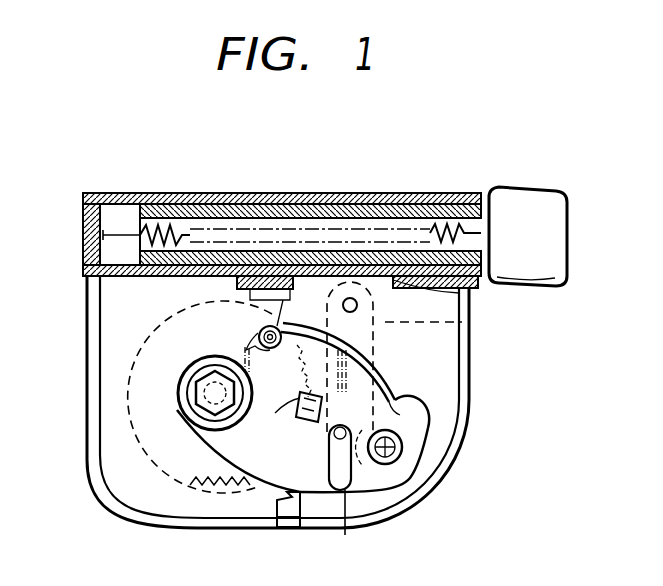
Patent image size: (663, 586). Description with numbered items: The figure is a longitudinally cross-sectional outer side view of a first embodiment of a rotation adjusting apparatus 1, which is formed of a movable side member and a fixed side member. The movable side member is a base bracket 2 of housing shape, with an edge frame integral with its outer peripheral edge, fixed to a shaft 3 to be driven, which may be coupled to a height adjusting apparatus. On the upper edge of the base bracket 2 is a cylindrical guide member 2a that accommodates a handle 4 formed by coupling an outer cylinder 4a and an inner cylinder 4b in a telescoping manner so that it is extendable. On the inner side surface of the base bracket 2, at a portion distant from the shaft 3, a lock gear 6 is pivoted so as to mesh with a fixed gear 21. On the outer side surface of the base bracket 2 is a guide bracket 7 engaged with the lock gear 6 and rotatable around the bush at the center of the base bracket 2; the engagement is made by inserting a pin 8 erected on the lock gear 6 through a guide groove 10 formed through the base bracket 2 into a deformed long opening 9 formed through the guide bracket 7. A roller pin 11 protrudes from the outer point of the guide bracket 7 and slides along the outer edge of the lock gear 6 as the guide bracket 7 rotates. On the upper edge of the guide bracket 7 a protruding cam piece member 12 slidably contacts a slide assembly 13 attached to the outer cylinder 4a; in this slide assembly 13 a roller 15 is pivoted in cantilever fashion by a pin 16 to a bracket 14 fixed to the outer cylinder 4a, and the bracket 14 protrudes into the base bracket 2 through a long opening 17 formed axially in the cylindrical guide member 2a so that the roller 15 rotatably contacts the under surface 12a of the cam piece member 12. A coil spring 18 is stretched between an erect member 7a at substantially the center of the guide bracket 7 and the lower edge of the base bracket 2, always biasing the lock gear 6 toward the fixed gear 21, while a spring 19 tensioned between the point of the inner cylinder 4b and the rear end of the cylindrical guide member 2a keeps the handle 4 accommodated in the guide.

The rotation adjusting apparatus 1 is at (558, 166).
The base bracket 2 is at (132, 492).
The cylindrical guide member 2a is at (469, 195).
The shaft to be driven 3 is at (115, 364).
The handle 4 is at (463, 152).
The outer cylinder 4a is at (390, 198).
The inner cylinder 4b is at (423, 198).
The lock gear 6 is at (462, 322).
The guide bracket 7 is at (392, 518).
The erect member 7a is at (303, 412).
The pin 8 is at (335, 486).
The deformed long opening 9 is at (345, 490).
The guide groove 10 is at (430, 422).
The roller pin 11 is at (405, 450).
The cam piece member 12 is at (390, 345).
The under surface 12a is at (430, 398).
The slide assembly 13 is at (316, 150).
The bracket 14 is at (268, 326).
The roller 15 is at (282, 324).
The pin 16 is at (292, 324).
The long opening 17 is at (455, 285).
The coil spring 18 is at (280, 505).
The spring 19 is at (133, 247).
The fixed gear 21 is at (115, 428).